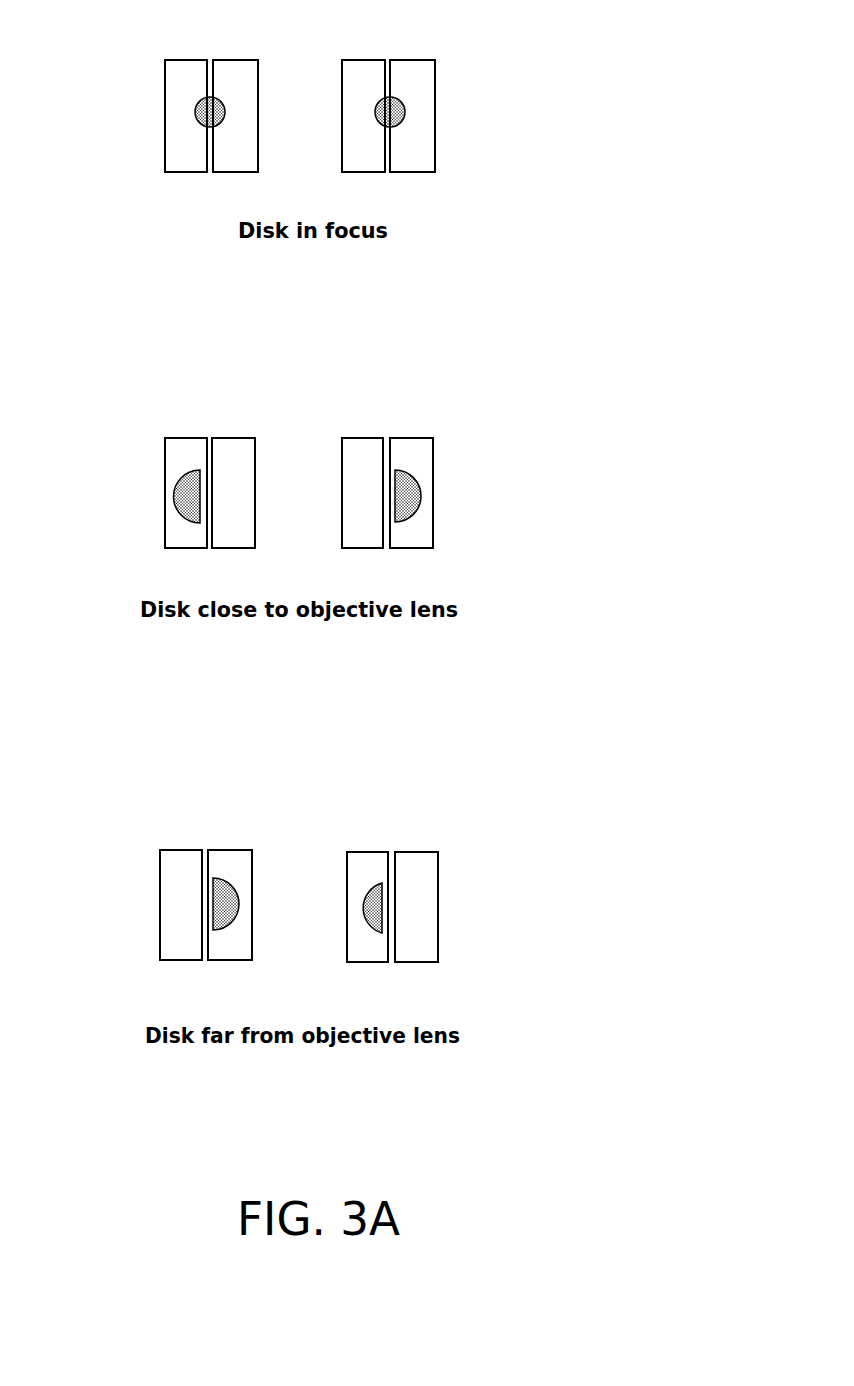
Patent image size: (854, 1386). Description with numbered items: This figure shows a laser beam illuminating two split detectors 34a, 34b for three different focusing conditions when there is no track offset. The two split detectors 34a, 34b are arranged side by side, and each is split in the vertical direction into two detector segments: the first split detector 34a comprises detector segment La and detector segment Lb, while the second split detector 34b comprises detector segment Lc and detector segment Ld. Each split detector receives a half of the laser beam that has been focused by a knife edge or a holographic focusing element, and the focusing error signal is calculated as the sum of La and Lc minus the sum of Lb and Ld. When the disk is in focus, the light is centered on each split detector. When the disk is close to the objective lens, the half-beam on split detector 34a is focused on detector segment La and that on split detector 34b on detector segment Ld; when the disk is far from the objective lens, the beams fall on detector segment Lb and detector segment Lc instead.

The first photodetector (two-segment) 34a is at (170, 483).
The second photodetector (two-segment) 34b is at (422, 484).
The detector segment La is at (183, 58).
The detector segment Lb is at (230, 58).
The detector segment Lc is at (362, 58).
The detector segment Ld is at (408, 58).